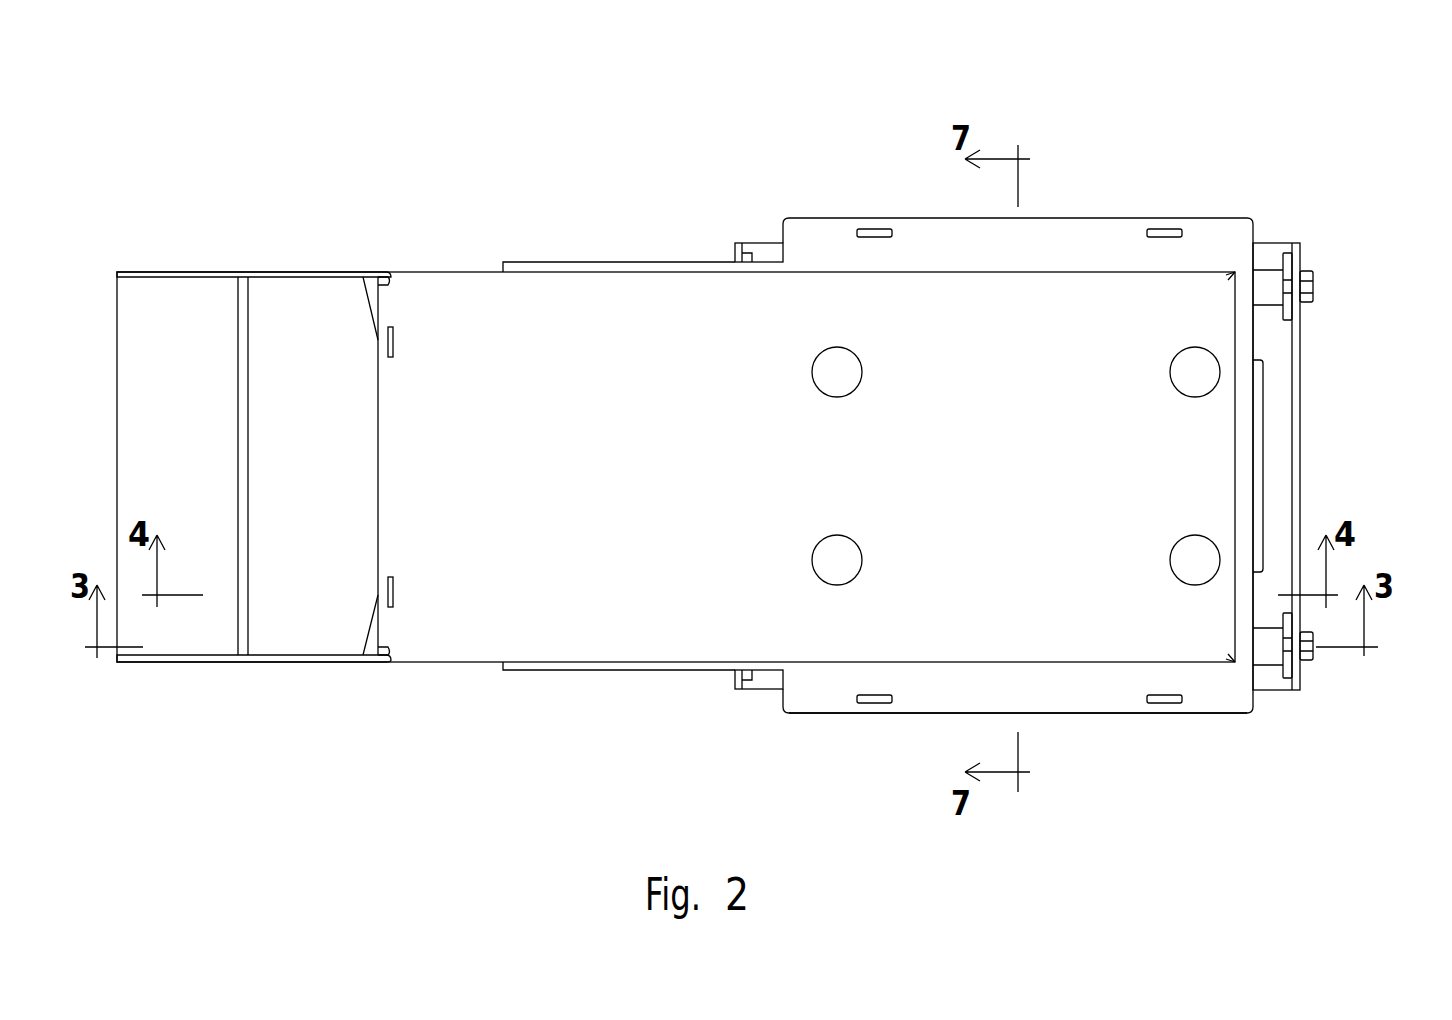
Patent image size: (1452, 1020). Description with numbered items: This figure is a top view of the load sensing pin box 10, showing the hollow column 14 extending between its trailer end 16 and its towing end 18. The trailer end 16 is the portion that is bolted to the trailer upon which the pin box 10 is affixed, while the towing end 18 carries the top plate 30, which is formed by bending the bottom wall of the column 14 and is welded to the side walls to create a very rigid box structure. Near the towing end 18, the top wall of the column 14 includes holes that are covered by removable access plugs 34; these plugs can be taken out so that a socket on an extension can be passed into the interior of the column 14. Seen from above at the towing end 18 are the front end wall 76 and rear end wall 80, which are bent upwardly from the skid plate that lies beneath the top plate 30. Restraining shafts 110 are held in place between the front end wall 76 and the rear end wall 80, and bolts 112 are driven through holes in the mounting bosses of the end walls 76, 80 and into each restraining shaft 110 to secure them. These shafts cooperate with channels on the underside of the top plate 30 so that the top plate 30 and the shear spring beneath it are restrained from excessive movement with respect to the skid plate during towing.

The load sensing pin box 10 is at (614, 160).
The column 14 is at (453, 298).
The trailer end 16 is at (152, 213).
The towing end 18 is at (1113, 153).
The top plate 30 is at (818, 693).
The access plugs 34 is at (812, 557).
The front end wall 76 is at (1302, 432).
The rear end wall 80 is at (735, 681).
The restraining shafts 110 is at (1268, 272).
The bolts 112 is at (1313, 287).